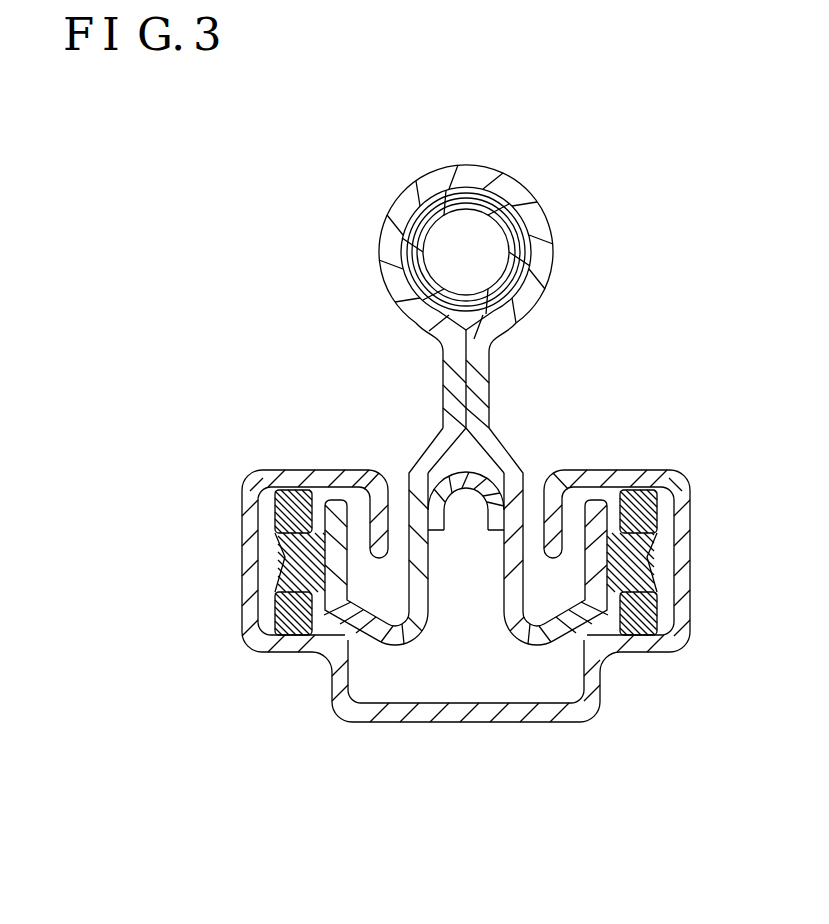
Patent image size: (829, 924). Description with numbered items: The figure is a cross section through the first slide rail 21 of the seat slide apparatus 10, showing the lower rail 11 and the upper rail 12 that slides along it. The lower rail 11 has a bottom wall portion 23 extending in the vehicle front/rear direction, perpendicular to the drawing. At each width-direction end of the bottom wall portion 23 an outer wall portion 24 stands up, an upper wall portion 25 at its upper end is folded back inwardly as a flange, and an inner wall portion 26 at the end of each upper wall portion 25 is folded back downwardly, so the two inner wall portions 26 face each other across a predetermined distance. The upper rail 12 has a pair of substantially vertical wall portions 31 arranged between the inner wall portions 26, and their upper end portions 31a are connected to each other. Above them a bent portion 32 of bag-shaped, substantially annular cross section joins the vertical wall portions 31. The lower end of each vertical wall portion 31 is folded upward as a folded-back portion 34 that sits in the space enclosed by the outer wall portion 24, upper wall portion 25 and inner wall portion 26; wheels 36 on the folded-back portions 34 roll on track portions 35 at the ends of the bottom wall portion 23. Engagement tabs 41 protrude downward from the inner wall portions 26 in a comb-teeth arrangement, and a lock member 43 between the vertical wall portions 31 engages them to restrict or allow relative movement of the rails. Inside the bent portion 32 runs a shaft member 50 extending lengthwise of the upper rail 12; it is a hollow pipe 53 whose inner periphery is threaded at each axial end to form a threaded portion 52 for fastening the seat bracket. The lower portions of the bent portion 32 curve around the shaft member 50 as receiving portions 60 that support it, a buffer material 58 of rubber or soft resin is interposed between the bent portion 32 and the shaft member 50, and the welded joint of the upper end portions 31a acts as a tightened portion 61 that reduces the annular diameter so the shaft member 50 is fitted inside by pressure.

The seat slide apparatus 10 is at (158, 162).
The first slide rail 21 is at (222, 193).
The lower rail 11 is at (248, 483).
The upper rail 12 is at (425, 183).
The bottom wall portion 23 is at (480, 722).
The outer wall portion 24 is at (244, 578).
The upper wall portion 25 is at (300, 479).
The inner wall portion 26 is at (386, 484).
The vertical wall portion 31 is at (431, 612).
The upper end portion 31a is at (461, 401).
The tightened portion 61 is at (501, 379).
The bent portion 32 is at (470, 164).
The folded-back portion 34 is at (345, 498).
The track portion 35 is at (300, 657).
The wheel 36 is at (270, 521).
The engagement tab 41 is at (379, 556).
The lock member 43 is at (464, 492).
The shaft member 50 is at (518, 252).
The pipe 53 is at (520, 264).
The threaded portion 52 is at (507, 239).
The buffer material 58 is at (493, 198).
The receiving portion 60 is at (420, 321).